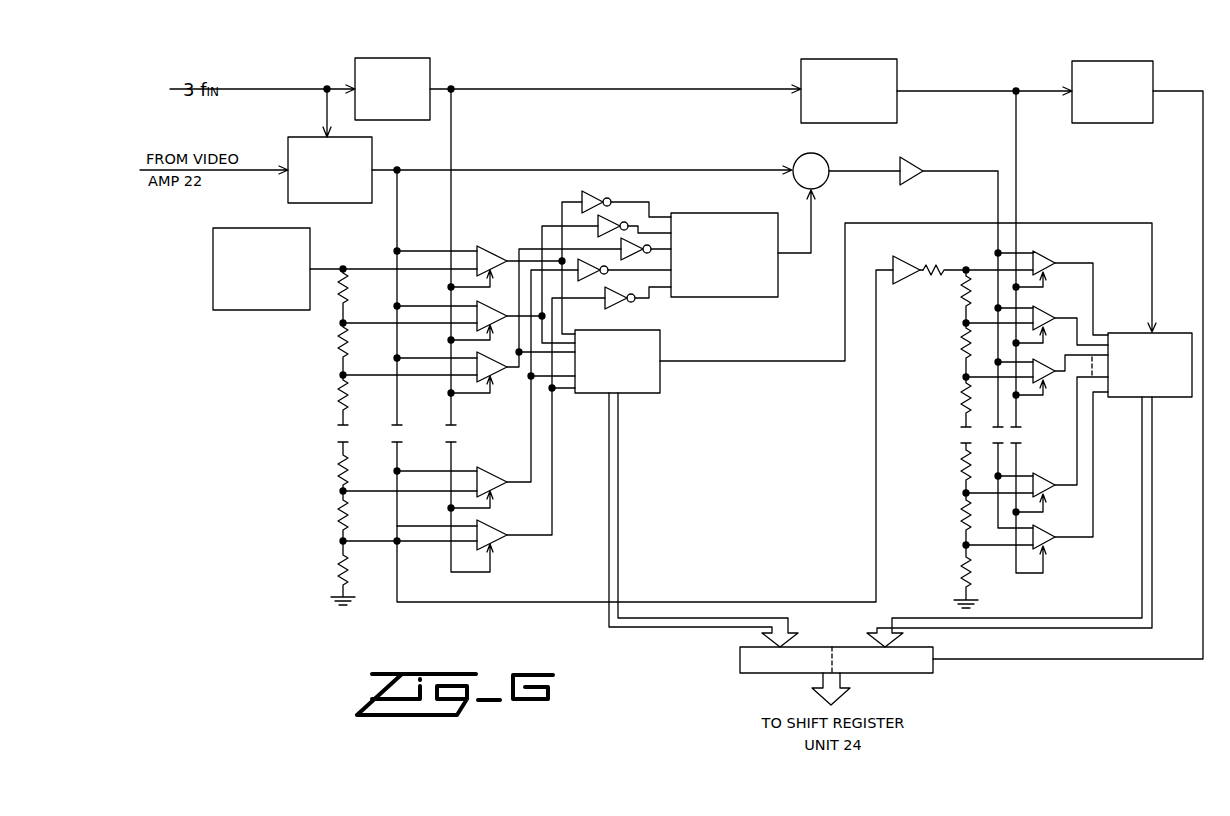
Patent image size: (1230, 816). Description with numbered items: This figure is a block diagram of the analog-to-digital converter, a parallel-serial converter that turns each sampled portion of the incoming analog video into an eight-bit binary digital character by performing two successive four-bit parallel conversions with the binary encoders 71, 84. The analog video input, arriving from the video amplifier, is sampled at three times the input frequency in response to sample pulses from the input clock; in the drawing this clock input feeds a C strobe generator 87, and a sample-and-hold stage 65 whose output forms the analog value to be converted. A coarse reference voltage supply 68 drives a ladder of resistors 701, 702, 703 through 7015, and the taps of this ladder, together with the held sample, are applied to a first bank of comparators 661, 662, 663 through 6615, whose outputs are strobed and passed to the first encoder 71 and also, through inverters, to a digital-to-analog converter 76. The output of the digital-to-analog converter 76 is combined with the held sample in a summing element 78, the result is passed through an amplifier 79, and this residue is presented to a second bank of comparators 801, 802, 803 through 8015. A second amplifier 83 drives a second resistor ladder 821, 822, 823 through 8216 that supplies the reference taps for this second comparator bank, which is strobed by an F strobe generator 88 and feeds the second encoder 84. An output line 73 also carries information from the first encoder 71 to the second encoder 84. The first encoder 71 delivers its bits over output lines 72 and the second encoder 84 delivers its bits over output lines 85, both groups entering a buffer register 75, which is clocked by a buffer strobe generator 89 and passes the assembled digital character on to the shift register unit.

The C strobe generator 87 is at (431, 57).
The F strobe generator 88 is at (838, 58).
The buffer strobe generator 89 is at (1073, 62).
The sample and hold circuit 65 is at (373, 158).
The coarse reference voltage supply 68 is at (312, 243).
The resistor 701 is at (335, 292).
The resistor 702 is at (335, 342).
The resistor 703 is at (335, 397).
The resistor 7015 is at (335, 566).
The comparator 661 is at (490, 247).
The comparator 662 is at (500, 302).
The comparator 663 is at (498, 377).
The comparator 6615 is at (500, 548).
The digital to analog converter 76 is at (676, 214).
The binary encoder 71 is at (657, 341).
The encoder I output lines 72 is at (620, 498).
The encoder I output line to encoder II 73 is at (740, 360).
The summing circuit 78 is at (797, 160).
The amplifier 79 is at (908, 156).
The amplifier 83 is at (893, 263).
The resistor 821 is at (946, 241).
The resistor 822 is at (960, 293).
The resistor 823 is at (960, 346).
The resistor 8216 is at (958, 578).
The comparator 801 is at (1046, 262).
The comparator 802 is at (1046, 314).
The comparator 803 is at (1048, 384).
The comparator 8015 is at (1048, 548).
The binary encoder 84 is at (1176, 332).
The encoder II output lines 85 is at (1142, 472).
The buffer register 75 is at (934, 674).